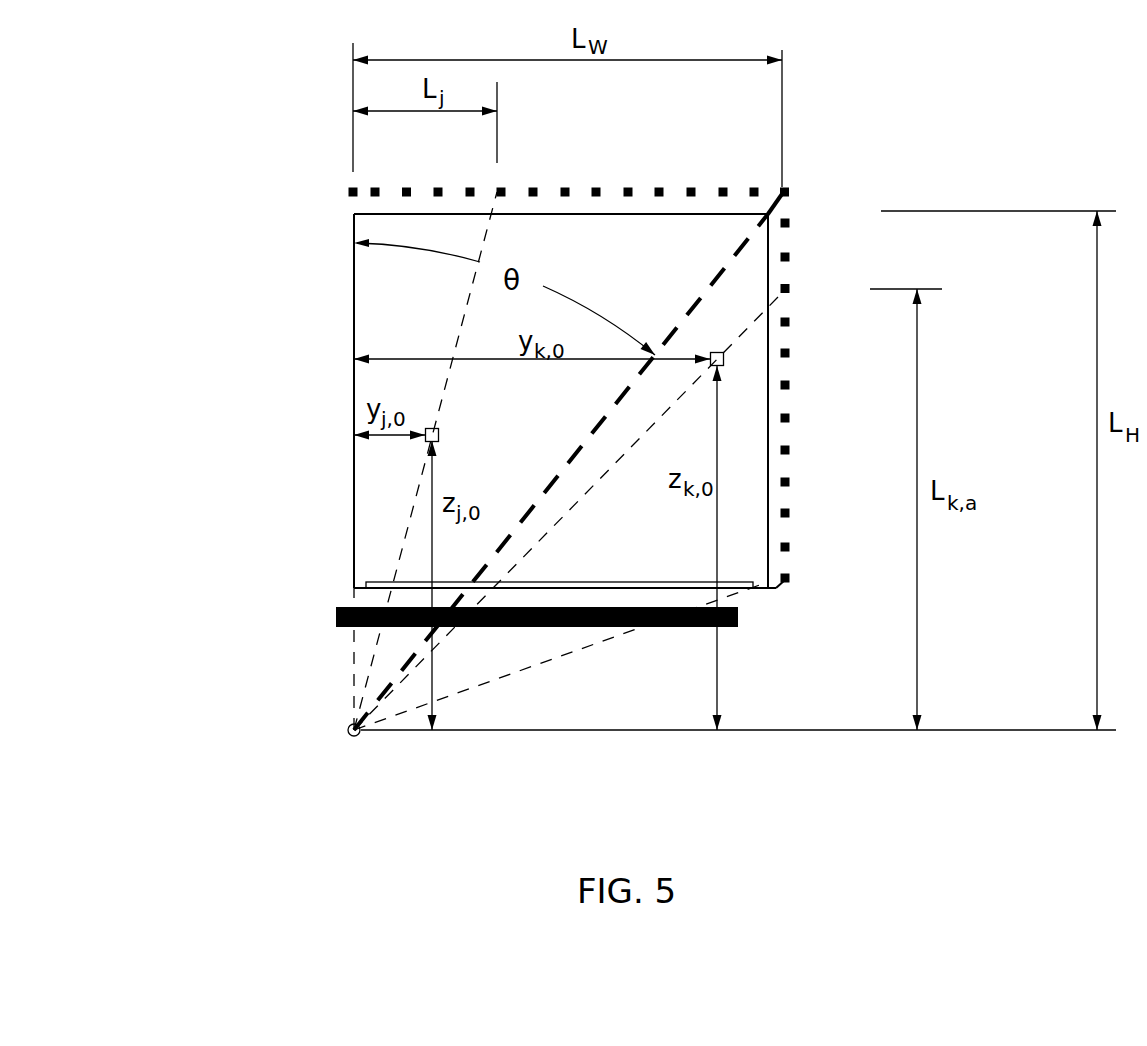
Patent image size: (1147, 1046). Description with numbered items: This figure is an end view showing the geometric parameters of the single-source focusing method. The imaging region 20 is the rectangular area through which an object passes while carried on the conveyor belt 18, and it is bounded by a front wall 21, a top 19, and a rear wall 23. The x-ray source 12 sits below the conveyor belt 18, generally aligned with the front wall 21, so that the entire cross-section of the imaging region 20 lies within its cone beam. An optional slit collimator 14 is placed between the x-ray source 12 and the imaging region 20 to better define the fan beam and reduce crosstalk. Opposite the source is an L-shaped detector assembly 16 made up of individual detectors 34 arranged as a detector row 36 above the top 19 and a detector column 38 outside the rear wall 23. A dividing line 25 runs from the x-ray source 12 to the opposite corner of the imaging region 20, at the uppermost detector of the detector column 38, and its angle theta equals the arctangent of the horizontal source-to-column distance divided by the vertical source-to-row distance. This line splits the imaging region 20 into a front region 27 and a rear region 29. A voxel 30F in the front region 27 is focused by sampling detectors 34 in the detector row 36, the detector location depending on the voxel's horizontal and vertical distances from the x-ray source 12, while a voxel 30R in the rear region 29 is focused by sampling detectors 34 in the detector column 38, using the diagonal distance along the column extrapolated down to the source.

The x-ray source 12 is at (347, 727).
The slit collimator 14 is at (336, 618).
The x-ray detector assembly 16 is at (799, 181).
The conveyor belt 18 is at (740, 595).
The top of imaging region 19 is at (702, 214).
The imaging region 20 is at (603, 402).
The front wall of imaging region 21 is at (353, 333).
The rear wall of imaging region 23 is at (768, 461).
The dividing line 25 is at (718, 272).
The front region 27 is at (409, 311).
The rear region 29 is at (574, 564).
The voxel in front region 30F is at (440, 437).
The voxel in rear region 30R is at (713, 352).
The detector 34 is at (790, 418).
The detector row 36 is at (631, 176).
The detector column 38 is at (807, 215).